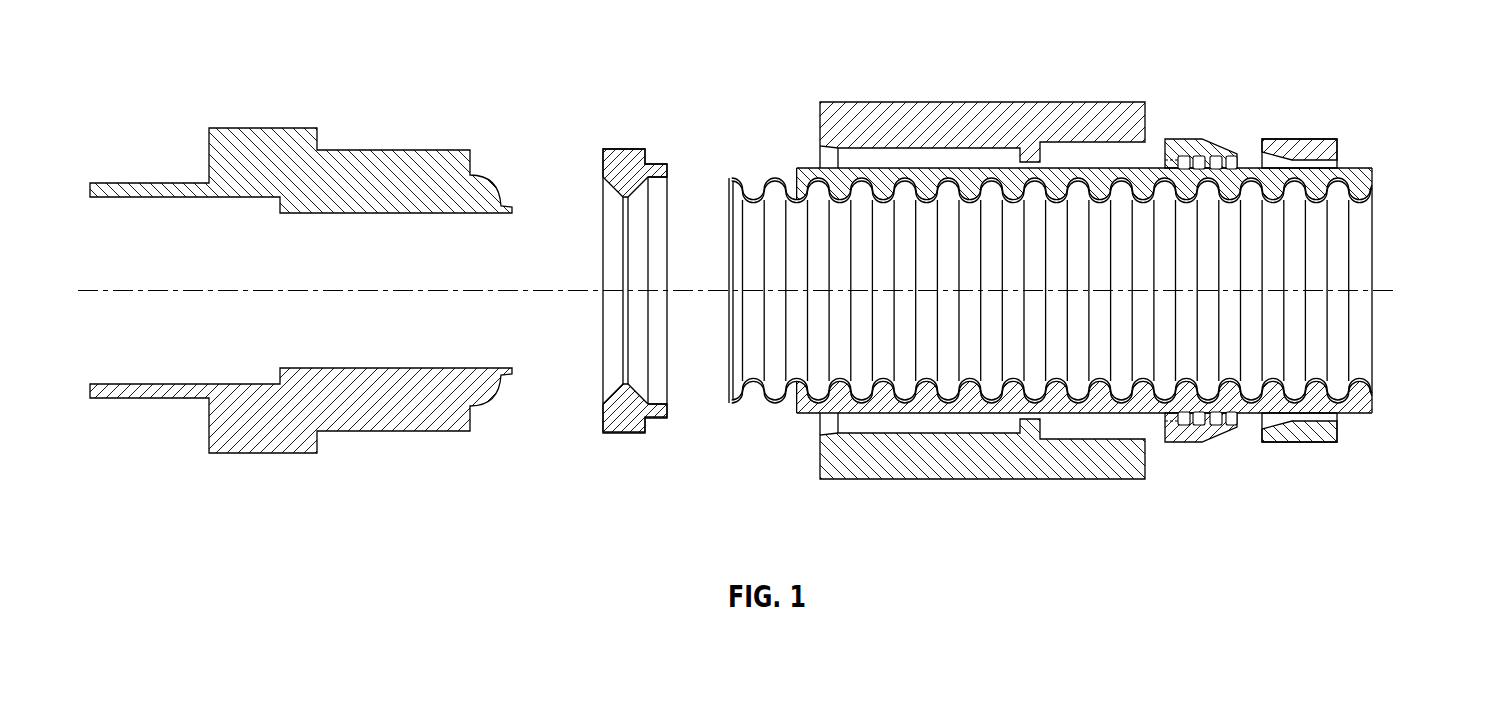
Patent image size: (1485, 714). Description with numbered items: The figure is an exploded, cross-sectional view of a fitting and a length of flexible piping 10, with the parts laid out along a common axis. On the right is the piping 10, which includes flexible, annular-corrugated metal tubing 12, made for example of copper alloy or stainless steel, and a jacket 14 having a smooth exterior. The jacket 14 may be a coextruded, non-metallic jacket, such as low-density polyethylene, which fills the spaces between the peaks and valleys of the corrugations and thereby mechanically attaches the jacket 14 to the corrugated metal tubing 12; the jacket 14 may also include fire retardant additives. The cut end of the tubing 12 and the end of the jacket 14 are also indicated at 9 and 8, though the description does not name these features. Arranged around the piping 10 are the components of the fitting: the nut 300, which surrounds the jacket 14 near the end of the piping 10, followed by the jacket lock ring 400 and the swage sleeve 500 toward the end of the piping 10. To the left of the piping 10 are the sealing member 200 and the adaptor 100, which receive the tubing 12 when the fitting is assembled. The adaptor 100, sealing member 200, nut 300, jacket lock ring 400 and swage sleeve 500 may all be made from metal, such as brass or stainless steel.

The adaptor 100 is at (250, 127).
The sealing member 200 is at (615, 258).
The sealing lip of sealing ring 8 is at (613, 395).
The corrugated metal tubing 12 is at (1030, 257).
The end portion of corrugated tube 9 is at (737, 384).
The nut 300 is at (882, 100).
The jacket lock ring 400 is at (1190, 138).
The swage sleeve 500 is at (1300, 138).
The jacket 14 is at (1357, 168).
The piping 10 is at (1066, 257).